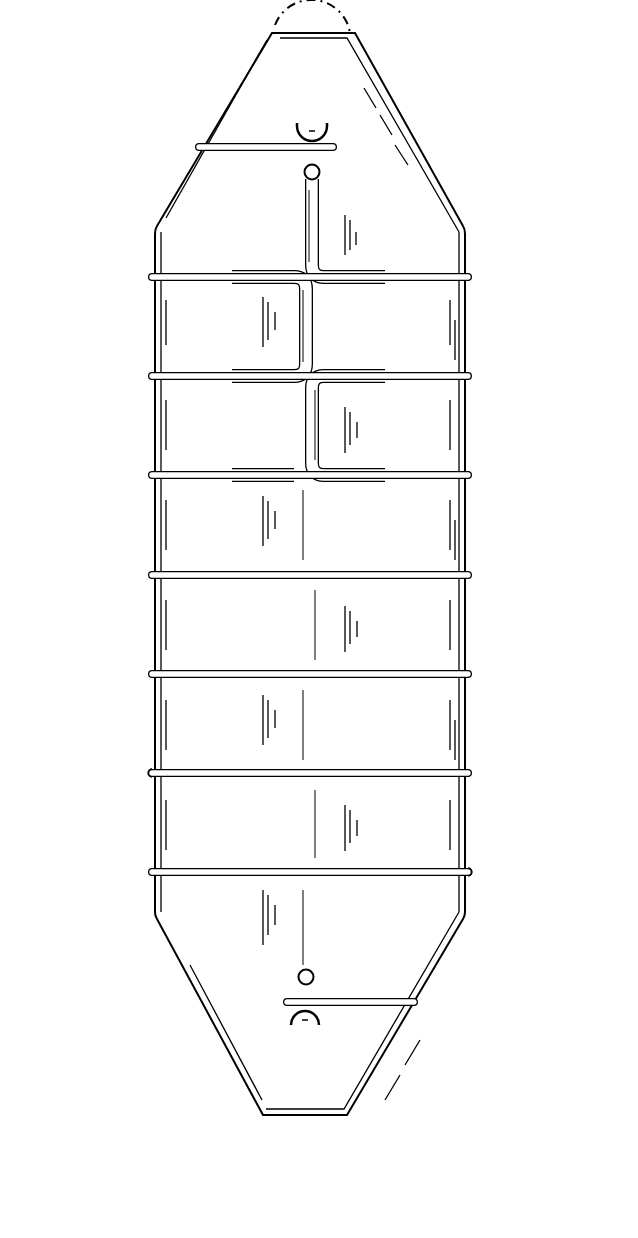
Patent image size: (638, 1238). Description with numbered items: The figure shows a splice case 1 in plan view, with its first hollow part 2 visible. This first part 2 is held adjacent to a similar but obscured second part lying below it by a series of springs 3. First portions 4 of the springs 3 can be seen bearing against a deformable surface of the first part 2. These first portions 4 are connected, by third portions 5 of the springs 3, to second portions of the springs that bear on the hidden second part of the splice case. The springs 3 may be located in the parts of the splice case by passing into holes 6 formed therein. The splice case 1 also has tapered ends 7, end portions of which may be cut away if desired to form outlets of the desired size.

The splice case 1 is at (127, 338).
The first hollow part 2 is at (418, 322).
The springs 3 is at (148, 474).
The first portions 4 is at (305, 715).
The third portions 5 is at (147, 773).
The holes 6 is at (306, 168).
The tapered ends 7 is at (333, 80).